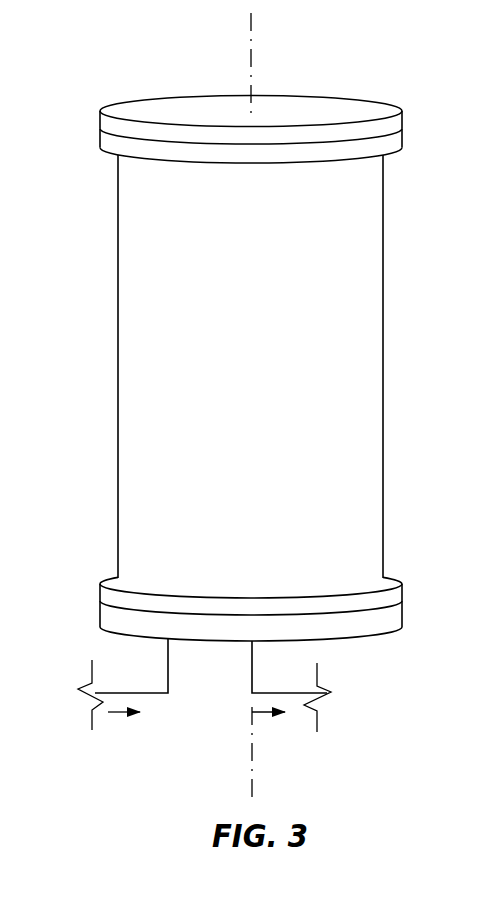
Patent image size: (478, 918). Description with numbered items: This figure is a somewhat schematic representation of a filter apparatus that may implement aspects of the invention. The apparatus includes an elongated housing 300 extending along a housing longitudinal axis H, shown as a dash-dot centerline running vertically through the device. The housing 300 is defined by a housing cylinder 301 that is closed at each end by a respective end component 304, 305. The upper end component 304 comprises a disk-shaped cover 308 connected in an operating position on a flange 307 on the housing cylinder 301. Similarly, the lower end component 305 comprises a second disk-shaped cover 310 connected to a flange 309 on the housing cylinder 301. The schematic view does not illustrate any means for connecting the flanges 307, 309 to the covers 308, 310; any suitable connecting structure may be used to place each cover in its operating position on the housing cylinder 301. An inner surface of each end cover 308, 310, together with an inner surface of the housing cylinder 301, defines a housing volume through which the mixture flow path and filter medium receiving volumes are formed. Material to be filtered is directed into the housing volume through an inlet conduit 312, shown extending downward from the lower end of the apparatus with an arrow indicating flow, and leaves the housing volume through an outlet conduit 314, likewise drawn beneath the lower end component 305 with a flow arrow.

The housing 300 is at (83, 307).
The housing cylinder 301 is at (270, 298).
The upper end component 304 is at (88, 112).
The lower end component 305 is at (370, 642).
The flange 307 is at (393, 154).
The disk-shaped cover 308 is at (398, 104).
The flange 309 is at (397, 583).
The second disk-shaped cover 310 is at (392, 629).
The inlet conduit 312 is at (158, 697).
The outlet conduit 314 is at (300, 697).
The housing longitudinal axis H is at (253, 60).